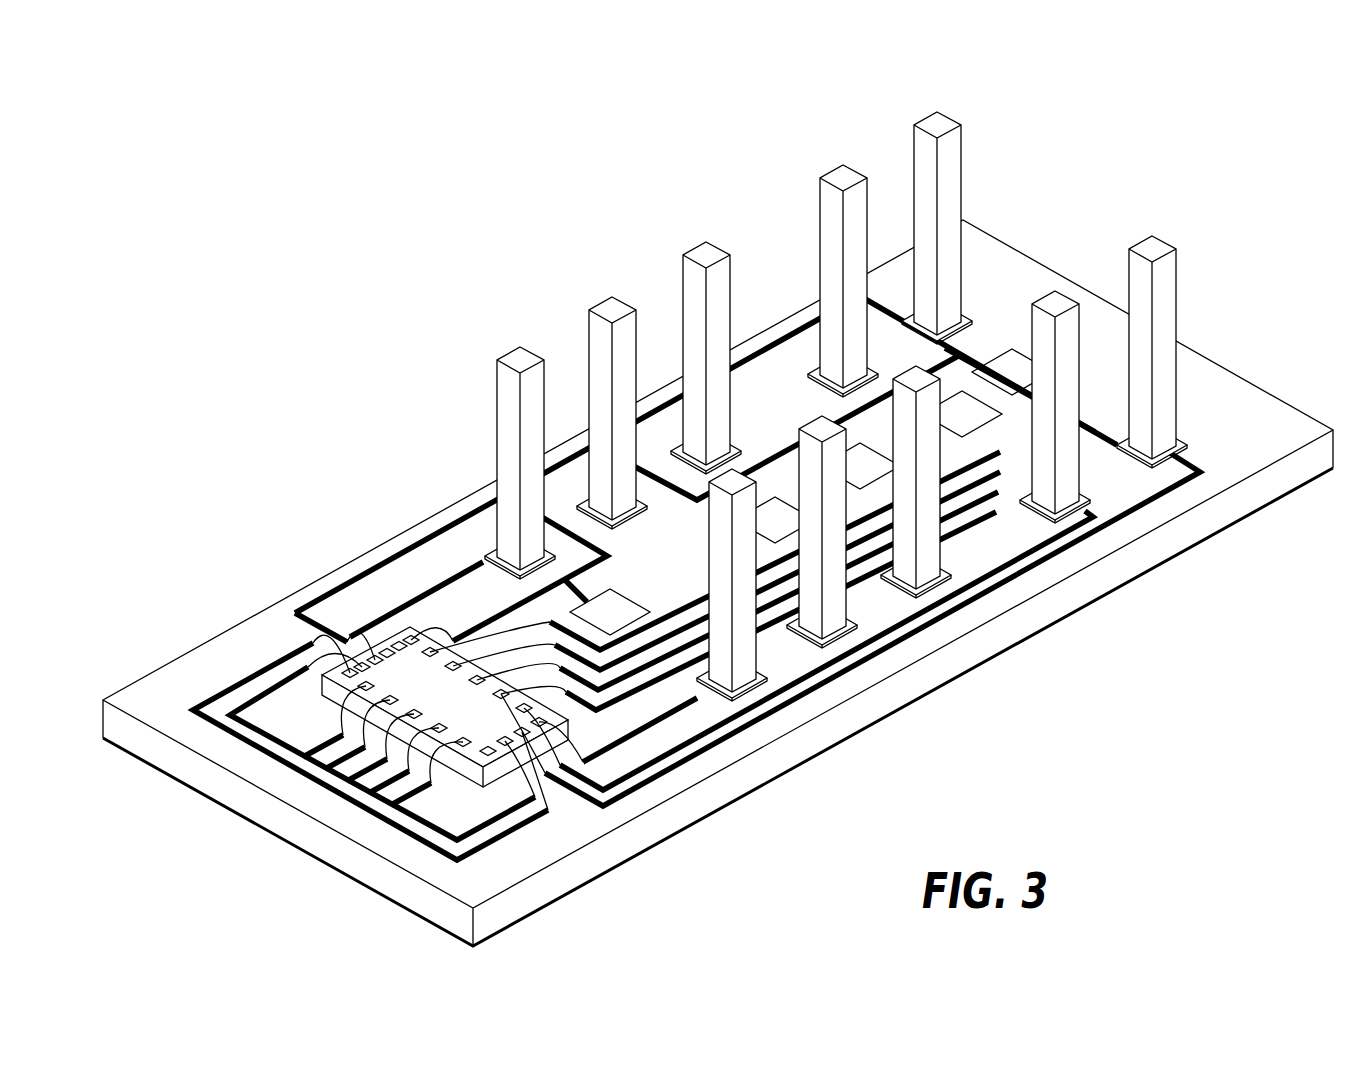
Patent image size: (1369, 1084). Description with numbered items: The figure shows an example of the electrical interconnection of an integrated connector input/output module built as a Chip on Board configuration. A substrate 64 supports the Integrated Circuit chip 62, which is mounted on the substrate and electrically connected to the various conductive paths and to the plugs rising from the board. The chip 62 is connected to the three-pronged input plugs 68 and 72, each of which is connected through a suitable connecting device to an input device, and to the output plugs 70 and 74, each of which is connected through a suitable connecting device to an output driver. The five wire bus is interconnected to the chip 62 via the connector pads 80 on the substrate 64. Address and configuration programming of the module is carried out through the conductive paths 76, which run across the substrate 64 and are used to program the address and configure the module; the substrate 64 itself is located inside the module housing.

The Integrated Circuit (IC) chip 62 is at (408, 640).
The substrate 64 is at (205, 640).
The input plug 68 is at (930, 540).
The output plug 70 is at (1160, 410).
The input plug 72 is at (706, 242).
The output plug 74 is at (937, 112).
The conductive paths 76 is at (320, 742).
The connector pads 80 is at (1020, 355).